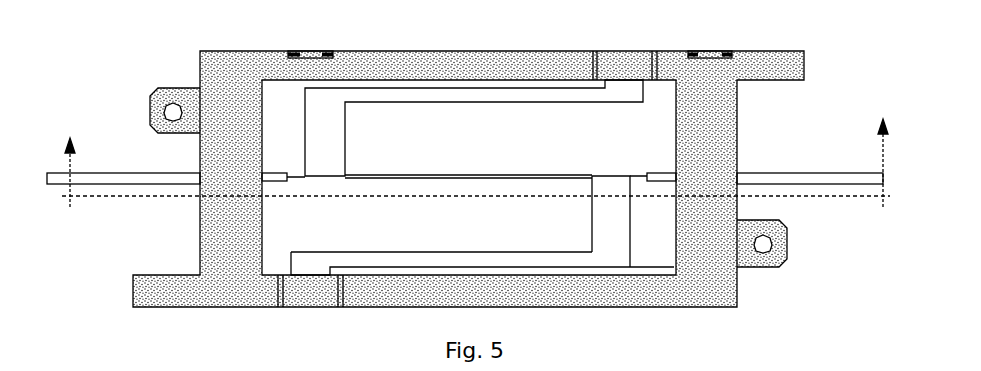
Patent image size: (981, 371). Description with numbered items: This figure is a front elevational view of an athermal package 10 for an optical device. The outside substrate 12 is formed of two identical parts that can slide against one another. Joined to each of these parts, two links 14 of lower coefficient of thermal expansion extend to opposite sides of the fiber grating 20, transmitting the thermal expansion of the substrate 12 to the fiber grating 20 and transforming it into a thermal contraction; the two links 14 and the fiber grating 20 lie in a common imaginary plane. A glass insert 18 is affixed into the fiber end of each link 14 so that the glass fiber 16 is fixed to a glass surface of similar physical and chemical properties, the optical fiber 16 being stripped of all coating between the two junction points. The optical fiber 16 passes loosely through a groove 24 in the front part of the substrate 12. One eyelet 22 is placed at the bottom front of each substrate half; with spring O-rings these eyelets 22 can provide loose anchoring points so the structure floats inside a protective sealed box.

The athermal package 10 is at (153, 43).
The substrate 12 is at (265, 50).
The links 14 is at (605, 105).
The optical fiber 16 is at (807, 173).
The glass insert 18 is at (620, 173).
The fiber grating 20 is at (450, 176).
The eyelet 22 is at (325, 50).
The groove 24 is at (197, 175).